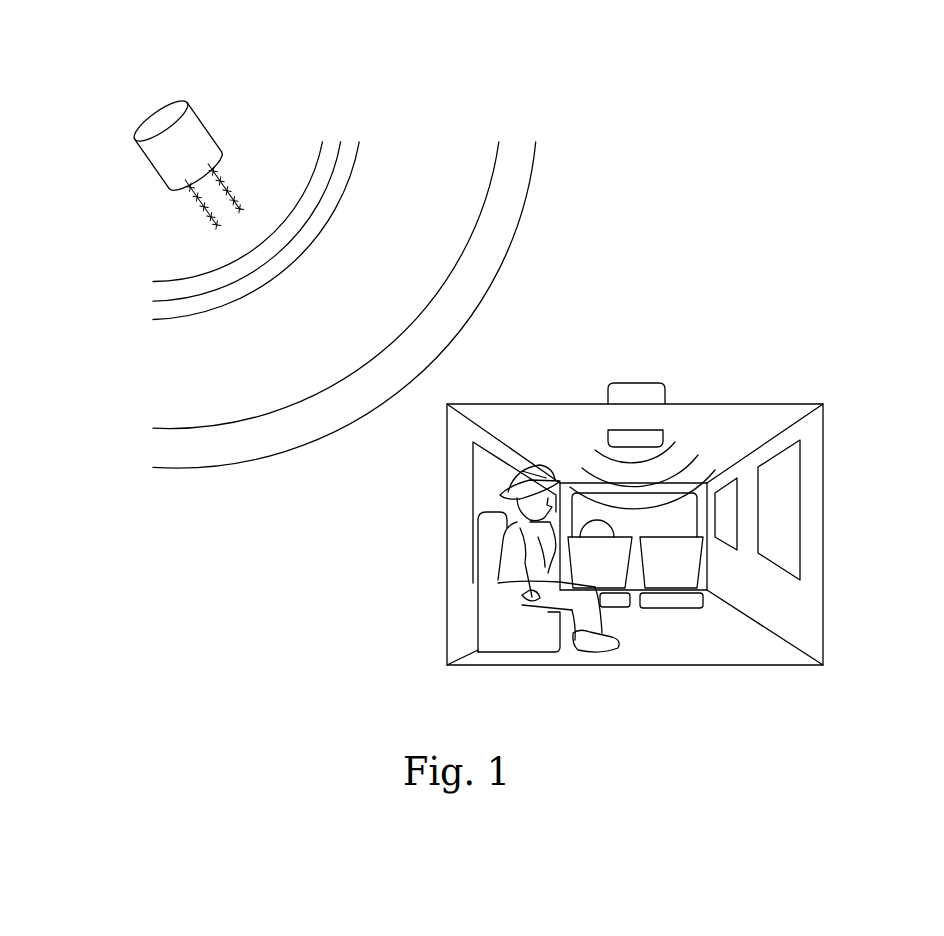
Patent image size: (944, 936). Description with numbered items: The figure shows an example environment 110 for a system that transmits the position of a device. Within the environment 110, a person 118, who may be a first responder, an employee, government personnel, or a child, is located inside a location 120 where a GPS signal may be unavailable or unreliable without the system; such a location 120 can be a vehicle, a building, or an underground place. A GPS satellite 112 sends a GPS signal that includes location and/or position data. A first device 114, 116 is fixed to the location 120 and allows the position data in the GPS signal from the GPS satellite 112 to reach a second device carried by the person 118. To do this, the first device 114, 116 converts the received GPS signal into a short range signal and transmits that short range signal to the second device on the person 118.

The environment 110 is at (118, 51).
The GPS satellite 112 is at (192, 122).
The first device 114 is at (643, 388).
The first device 116 is at (647, 437).
The person 118 is at (523, 603).
The location 120 is at (810, 432).